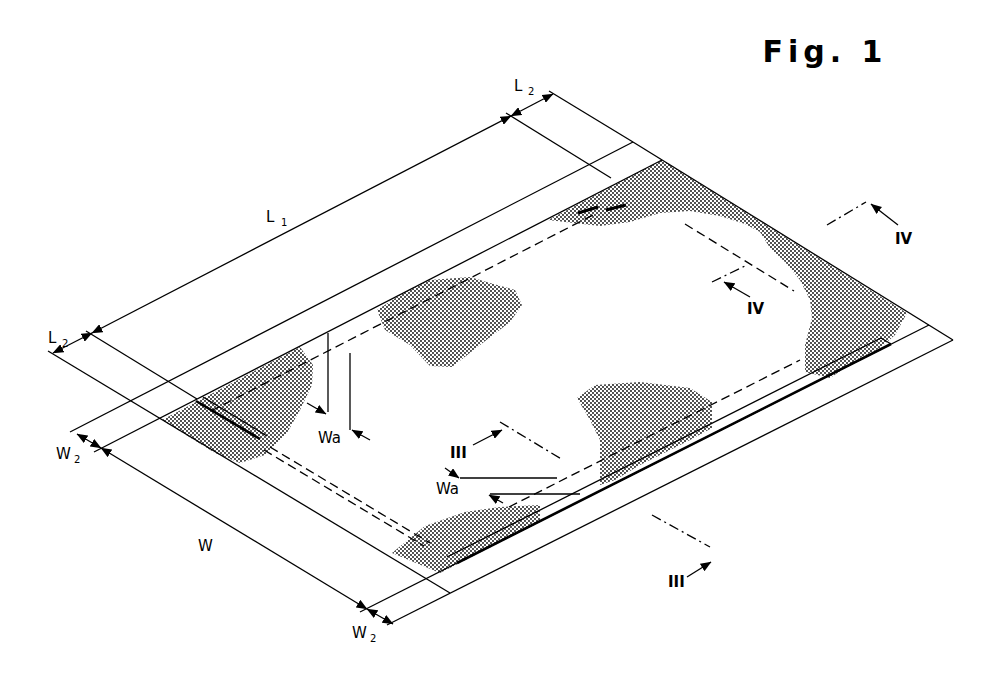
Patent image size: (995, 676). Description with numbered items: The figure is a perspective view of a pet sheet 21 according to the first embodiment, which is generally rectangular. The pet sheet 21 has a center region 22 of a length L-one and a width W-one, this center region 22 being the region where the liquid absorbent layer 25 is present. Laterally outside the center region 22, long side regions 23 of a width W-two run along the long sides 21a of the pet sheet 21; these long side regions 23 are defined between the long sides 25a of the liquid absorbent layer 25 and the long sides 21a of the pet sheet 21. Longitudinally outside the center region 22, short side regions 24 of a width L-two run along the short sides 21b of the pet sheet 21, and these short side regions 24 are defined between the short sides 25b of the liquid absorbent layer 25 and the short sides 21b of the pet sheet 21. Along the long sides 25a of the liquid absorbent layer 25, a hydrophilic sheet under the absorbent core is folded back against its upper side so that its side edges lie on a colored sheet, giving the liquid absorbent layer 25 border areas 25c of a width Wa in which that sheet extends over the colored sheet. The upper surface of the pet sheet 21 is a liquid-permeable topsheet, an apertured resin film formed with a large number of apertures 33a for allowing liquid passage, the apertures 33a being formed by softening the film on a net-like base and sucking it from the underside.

The pet sheet 21 is at (500, 335).
The long sides 21a is at (393, 263).
The short sides 21b is at (740, 205).
The center region 22 is at (713, 382).
The long side regions 23 is at (282, 345).
The short side regions 24 is at (757, 245).
The liquid absorbent layer 25 is at (507, 548).
The long sides of the liquid absorbent layer 25a is at (467, 257).
The short sides of the liquid absorbent layer 25b is at (797, 273).
The border areas 25c is at (353, 327).
The apertures 33a is at (653, 223).